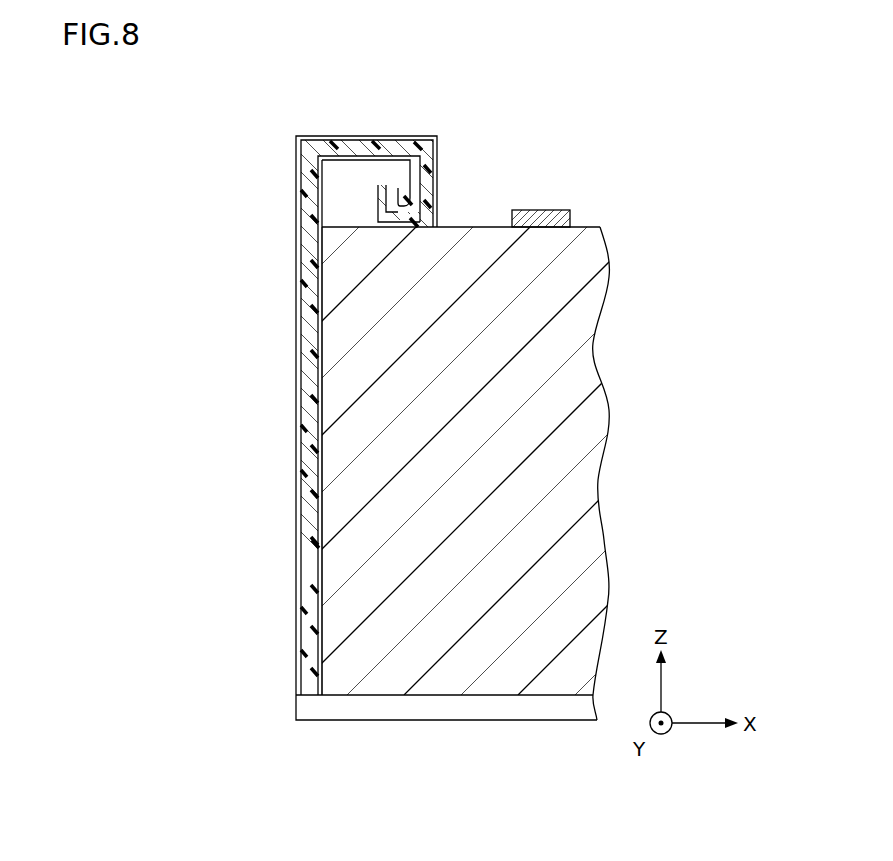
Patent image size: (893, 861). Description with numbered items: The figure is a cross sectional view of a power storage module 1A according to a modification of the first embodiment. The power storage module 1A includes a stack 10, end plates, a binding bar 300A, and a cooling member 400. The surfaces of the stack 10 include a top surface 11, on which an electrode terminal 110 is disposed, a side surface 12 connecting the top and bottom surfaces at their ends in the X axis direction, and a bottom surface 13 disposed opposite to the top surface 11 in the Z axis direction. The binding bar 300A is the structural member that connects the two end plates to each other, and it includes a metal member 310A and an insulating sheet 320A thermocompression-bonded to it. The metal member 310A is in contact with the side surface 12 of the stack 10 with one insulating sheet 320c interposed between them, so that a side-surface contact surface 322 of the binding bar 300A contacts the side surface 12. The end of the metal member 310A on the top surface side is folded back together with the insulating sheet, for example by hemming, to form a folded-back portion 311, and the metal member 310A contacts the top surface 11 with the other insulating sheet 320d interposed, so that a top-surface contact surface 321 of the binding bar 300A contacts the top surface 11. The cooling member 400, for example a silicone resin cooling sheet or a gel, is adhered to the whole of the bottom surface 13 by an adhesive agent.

The power storage module 1A is at (294, 121).
The stack 10 is at (518, 678).
The top surface 11 is at (492, 227).
The side surface 12 is at (320, 621).
The bottom surface 13 is at (418, 695).
The electrode terminal 110 is at (538, 209).
The binding bar 300A is at (297, 372).
The metal member 310A is at (312, 452).
The folded-back portion 311 is at (436, 172).
The insulating sheet 320A is at (238, 427).
The one insulating sheet 320c is at (320, 492).
The other insulating sheet 320d is at (298, 402).
The top-surface contact surface 321 is at (413, 234).
The side-surface contact surface 322 is at (327, 545).
The cooling member 400 is at (376, 707).